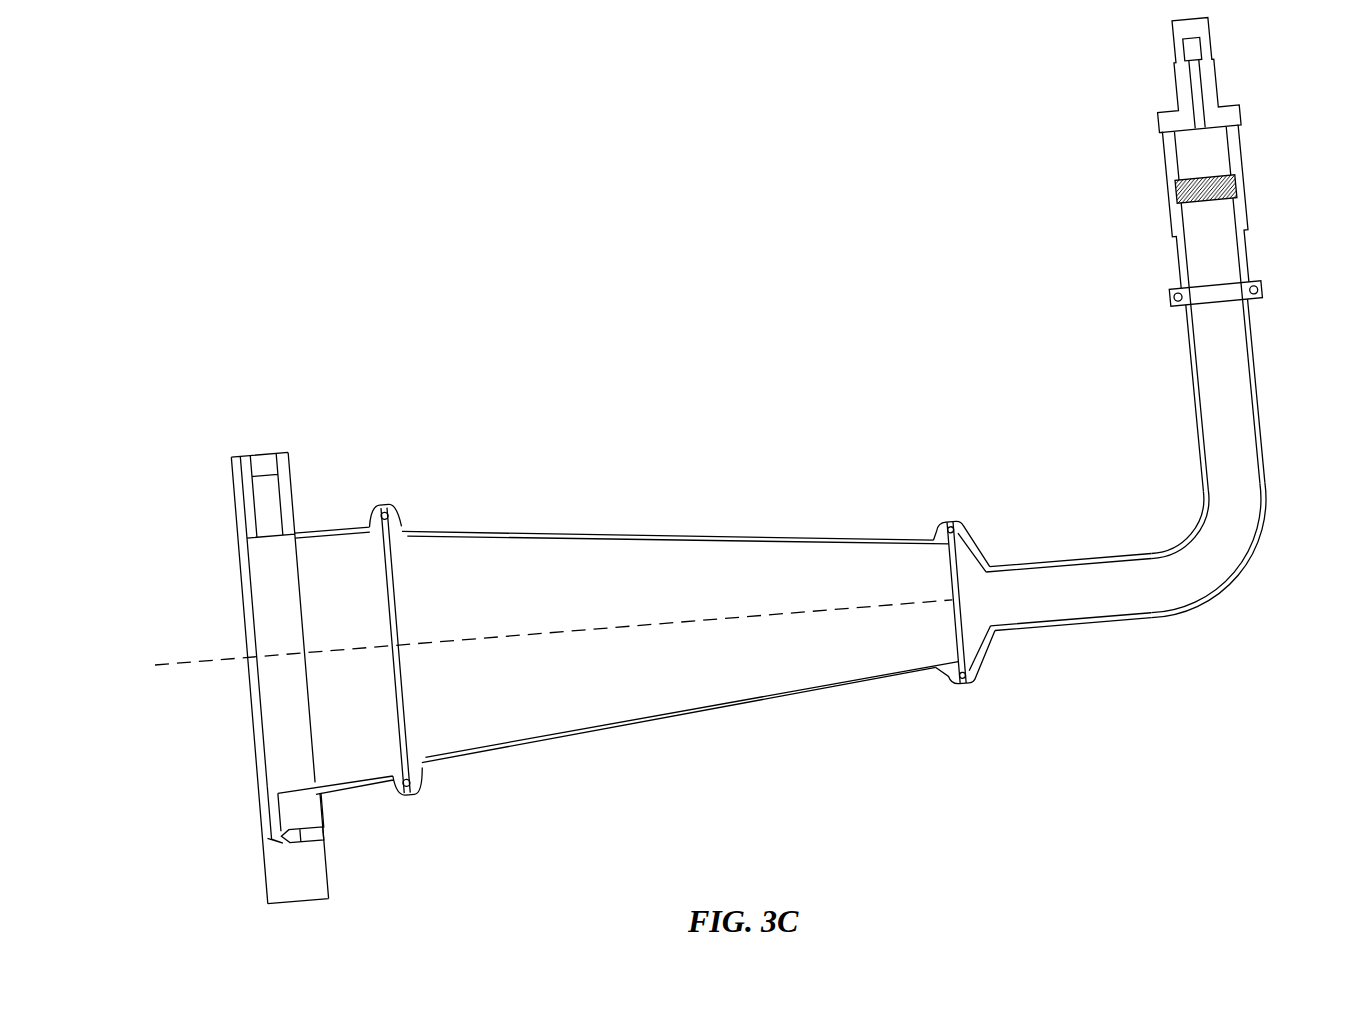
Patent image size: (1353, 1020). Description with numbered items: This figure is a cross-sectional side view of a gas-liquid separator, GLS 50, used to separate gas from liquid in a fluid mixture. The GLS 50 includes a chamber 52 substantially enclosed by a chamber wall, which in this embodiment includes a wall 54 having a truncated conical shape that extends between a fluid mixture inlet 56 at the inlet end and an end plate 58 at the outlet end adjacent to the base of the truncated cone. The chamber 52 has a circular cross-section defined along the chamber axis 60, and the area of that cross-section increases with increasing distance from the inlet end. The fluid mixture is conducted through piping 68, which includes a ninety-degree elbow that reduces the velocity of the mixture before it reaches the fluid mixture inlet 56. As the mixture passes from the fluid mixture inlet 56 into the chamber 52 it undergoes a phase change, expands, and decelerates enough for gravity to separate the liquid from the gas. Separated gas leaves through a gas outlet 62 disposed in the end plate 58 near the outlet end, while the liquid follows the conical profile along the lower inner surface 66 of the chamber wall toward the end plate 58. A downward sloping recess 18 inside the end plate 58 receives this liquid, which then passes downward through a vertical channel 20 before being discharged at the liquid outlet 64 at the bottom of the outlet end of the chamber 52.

The downward sloping recess 18 is at (303, 779).
The vertical channel 20 is at (273, 822).
The GLS 50 is at (669, 412).
The chamber 52 is at (657, 617).
The wall 54 is at (722, 536).
The fluid mixture inlet 56 is at (968, 603).
The end plate 58 is at (233, 510).
The chamber axis 60 is at (508, 640).
The gas outlet 62 is at (266, 452).
The liquid outlet 64 is at (323, 832).
The lower inner surface 66 is at (536, 733).
The piping 68 is at (1221, 590).